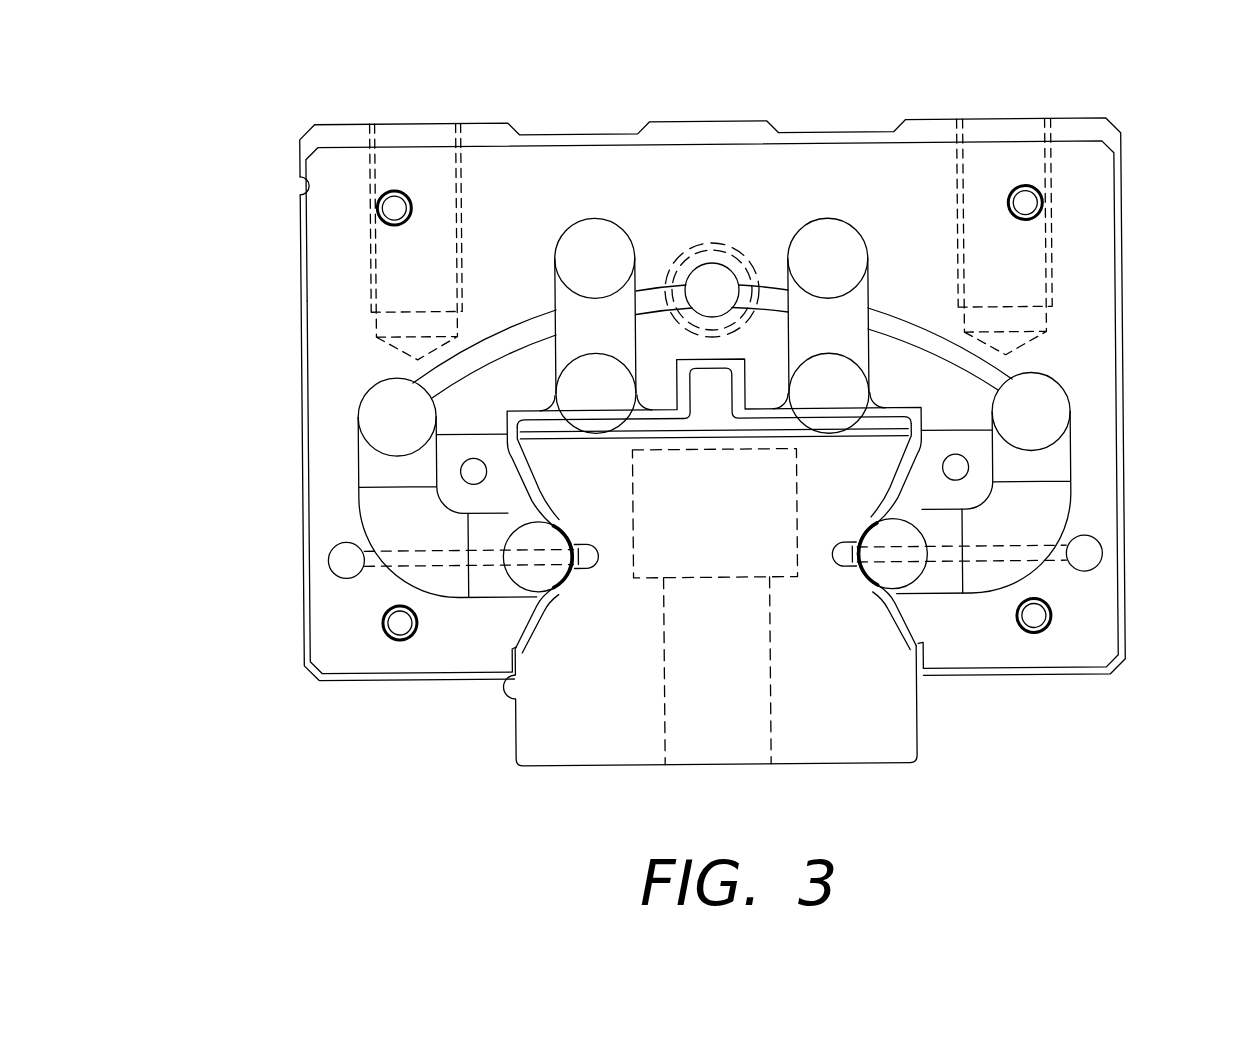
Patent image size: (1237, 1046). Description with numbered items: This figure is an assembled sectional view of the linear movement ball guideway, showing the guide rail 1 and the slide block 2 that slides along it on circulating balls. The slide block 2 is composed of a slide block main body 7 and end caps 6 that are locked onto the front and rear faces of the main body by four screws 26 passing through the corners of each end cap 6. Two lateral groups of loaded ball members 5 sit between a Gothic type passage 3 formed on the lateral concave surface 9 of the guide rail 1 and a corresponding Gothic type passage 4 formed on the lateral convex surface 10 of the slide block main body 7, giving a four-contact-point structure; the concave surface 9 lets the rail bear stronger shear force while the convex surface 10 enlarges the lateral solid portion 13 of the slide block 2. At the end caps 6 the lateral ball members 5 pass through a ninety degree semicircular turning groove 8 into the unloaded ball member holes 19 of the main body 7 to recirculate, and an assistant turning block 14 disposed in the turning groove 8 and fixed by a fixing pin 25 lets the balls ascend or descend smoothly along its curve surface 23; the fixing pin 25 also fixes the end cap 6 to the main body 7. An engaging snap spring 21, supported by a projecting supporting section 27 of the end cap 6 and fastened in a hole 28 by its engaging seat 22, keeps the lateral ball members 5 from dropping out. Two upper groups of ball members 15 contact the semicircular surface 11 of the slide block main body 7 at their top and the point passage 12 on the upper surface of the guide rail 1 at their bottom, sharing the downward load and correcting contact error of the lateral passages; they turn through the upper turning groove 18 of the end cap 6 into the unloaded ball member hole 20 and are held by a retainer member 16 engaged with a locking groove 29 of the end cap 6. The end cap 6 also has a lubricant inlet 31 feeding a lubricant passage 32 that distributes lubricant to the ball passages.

The guide rail 1 is at (548, 714).
The slide block 2 is at (320, 398).
The Gothic type passage 3 is at (525, 525).
The Gothic type passage 4 is at (385, 612).
The lateral ball members 5 is at (530, 578).
The end cap 6 is at (330, 215).
The slide block main body 7 is at (328, 133).
The semicircular turning groove 8 is at (377, 510).
The lateral concave surface 9 is at (530, 480).
The lateral convex surface 10 is at (530, 478).
The semicircular surface 11 is at (585, 355).
The point passage 12 is at (595, 440).
The lateral solid portion 13 is at (530, 574).
The assistant turning block 14 is at (977, 472).
The upper ball members 15 is at (603, 383).
The retainer member 16 is at (730, 367).
The upper turning groove 18 is at (845, 310).
The unloaded ball member holes 19 is at (373, 385).
The unloaded ball member hole 20 is at (606, 222).
The engaging snap spring 21 is at (848, 565).
The engaging seat 22 is at (925, 567).
The curve surface 23 is at (913, 590).
The fixing pin 25 is at (966, 462).
The screws 26 is at (1045, 190).
The projecting supporting section 27 is at (592, 572).
The hole 28 is at (1101, 553).
The locking groove 29 is at (757, 352).
The lubricant inlet 31 is at (711, 244).
The lubricant passage 32 is at (1043, 330).